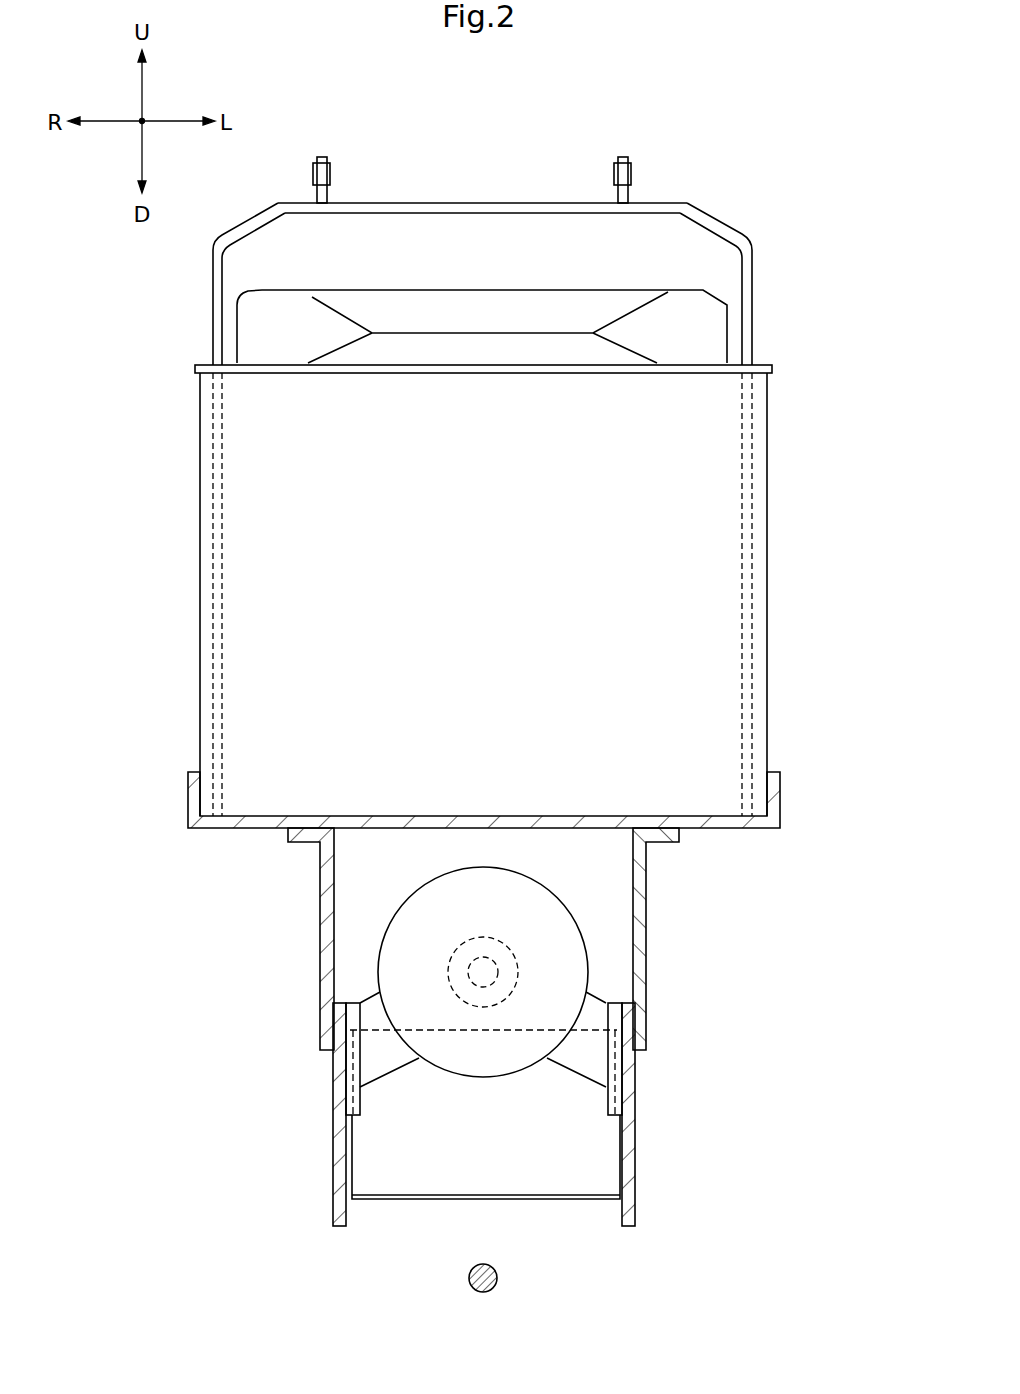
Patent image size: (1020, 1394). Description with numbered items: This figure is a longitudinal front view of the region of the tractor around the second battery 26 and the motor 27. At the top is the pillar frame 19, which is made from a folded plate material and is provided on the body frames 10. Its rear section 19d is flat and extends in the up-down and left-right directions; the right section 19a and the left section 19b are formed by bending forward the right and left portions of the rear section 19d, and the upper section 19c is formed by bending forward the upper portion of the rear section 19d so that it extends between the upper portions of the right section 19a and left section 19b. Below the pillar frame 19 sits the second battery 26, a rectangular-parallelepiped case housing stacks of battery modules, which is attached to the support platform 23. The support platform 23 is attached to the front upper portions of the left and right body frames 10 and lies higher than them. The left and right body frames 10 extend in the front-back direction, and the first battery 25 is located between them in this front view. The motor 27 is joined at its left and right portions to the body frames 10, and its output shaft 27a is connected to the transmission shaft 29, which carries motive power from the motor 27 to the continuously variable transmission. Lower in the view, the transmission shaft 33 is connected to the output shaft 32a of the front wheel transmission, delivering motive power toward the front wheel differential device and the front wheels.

The pillar frame 19 is at (485, 456).
The right section 19a is at (212, 336).
The left section 19b is at (752, 336).
The upper section 19c is at (657, 202).
The rear section 19d is at (478, 235).
The second battery 26 is at (767, 593).
The support platform 23 is at (435, 816).
The body frame 10 is at (333, 1158).
The first battery 25 is at (416, 1180).
The motor 27 is at (518, 972).
The output shaft 27a is at (611, 963).
The transmission shaft 29 is at (497, 967).
The transmission shaft 33 is at (551, 1290).
The output shaft 32a is at (493, 1290).